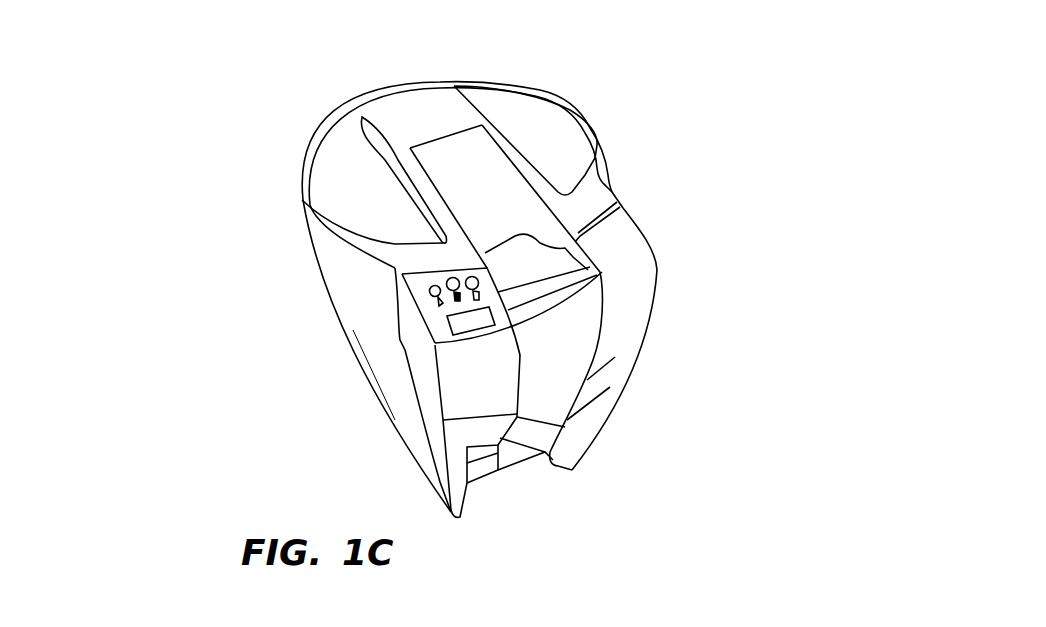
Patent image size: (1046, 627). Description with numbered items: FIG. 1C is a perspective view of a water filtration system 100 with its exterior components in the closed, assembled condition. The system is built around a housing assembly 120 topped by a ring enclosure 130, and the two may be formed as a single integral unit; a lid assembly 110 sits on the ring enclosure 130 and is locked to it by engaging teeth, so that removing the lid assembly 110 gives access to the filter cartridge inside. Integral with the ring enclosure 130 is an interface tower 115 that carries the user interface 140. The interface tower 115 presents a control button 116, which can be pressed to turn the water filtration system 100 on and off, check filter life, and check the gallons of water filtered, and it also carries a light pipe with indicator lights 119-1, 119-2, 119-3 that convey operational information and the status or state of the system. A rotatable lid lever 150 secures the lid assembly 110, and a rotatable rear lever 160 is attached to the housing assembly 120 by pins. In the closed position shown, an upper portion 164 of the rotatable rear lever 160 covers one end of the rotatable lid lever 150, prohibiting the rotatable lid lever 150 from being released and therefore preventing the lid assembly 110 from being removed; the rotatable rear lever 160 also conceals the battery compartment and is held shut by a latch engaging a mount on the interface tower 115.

The water filtration system 100 is at (678, 135).
The lid assembly 110 is at (574, 119).
The interface tower 115 is at (453, 384).
The control button 116 is at (487, 337).
The indicator light 119-1 is at (423, 289).
The indicator light 119-2 is at (440, 272).
The indicator light 119-3 is at (463, 269).
The housing assembly 120 is at (377, 432).
The ring enclosure 130 is at (675, 225).
The user interface 140 is at (423, 308).
The rotatable lid lever 150 is at (441, 150).
The rotatable rear lever 160 is at (574, 343).
The upper portion 164 is at (567, 293).